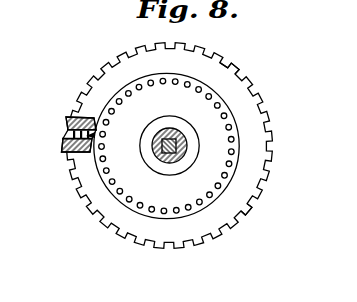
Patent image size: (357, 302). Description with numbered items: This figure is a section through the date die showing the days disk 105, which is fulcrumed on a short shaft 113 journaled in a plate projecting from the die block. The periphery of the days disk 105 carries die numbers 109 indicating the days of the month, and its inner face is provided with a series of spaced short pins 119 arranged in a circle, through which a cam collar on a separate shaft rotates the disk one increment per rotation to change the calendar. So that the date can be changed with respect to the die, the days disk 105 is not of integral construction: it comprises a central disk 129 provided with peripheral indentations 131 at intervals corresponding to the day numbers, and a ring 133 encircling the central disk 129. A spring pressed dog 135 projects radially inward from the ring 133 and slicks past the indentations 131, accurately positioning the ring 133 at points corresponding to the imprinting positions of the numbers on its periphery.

The days disk 105 is at (329, 134).
The die numbers 109 is at (251, 218).
The short shaft 113 is at (165, 152).
The pins 119 is at (218, 186).
The central disk 129 is at (187, 98).
The peripheral indentations 131 is at (228, 107).
The ring 133 is at (237, 84).
The spring pressed dog 135 is at (93, 137).